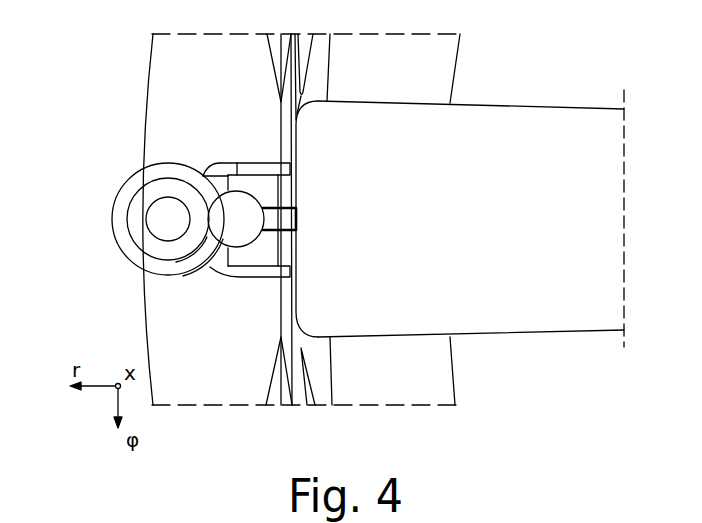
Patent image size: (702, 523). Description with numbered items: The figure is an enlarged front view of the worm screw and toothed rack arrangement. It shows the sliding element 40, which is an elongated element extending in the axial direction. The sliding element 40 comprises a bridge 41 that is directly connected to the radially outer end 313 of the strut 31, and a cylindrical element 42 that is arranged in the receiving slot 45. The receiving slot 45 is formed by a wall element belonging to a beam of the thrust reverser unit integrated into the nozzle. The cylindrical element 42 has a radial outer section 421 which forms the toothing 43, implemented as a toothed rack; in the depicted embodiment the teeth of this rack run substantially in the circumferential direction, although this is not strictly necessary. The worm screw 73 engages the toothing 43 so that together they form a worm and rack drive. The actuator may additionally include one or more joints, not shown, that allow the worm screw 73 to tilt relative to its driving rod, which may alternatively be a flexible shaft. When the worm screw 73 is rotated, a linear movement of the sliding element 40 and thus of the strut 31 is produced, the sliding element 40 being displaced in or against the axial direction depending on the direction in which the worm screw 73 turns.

The strut 31 is at (545, 318).
The radially outer end 313 is at (300, 347).
The sliding element 40 is at (240, 261).
The bridge 41 is at (277, 206).
The cylindrical element 42 is at (262, 242).
The radial outer section 421 is at (213, 262).
The toothing 43 is at (213, 180).
The receiving slot 45 is at (213, 168).
The worm screw 73 is at (120, 223).